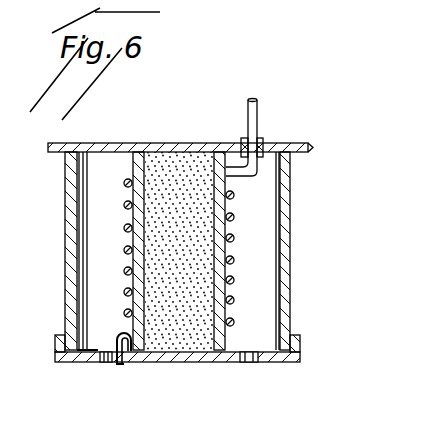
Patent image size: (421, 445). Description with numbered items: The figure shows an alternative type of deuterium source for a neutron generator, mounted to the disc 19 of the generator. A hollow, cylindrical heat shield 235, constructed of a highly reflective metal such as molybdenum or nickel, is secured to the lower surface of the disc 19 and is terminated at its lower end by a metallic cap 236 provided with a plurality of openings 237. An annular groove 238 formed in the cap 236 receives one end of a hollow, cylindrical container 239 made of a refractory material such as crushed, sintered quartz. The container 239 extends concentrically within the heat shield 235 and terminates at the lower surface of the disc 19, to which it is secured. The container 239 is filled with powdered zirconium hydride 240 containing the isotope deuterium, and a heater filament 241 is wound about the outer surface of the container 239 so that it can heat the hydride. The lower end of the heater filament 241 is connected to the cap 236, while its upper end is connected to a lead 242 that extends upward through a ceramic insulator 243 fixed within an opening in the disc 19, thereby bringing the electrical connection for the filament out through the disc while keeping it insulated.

The disc 19 is at (115, 143).
The powdered zirconium hydride 240 is at (168, 150).
The lead 242 is at (248, 115).
The ceramic insulator 243 is at (263, 141).
The heat shield 235 is at (292, 199).
The container 239 is at (233, 225).
The heater filament 241 is at (233, 262).
The annular groove 238 is at (247, 352).
The openings 237 is at (130, 363).
The cap 236 is at (100, 363).